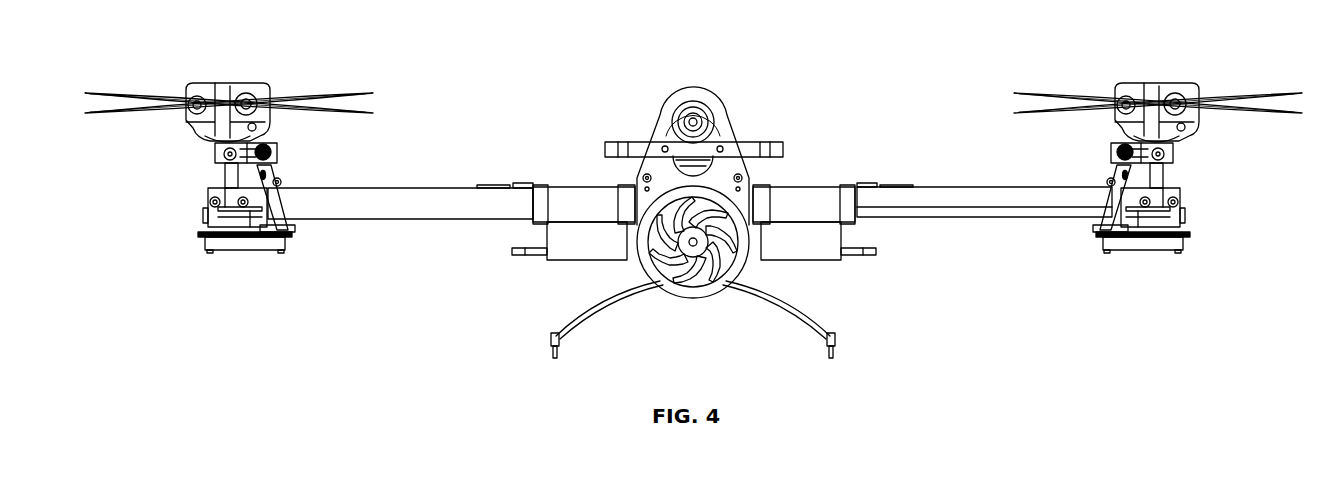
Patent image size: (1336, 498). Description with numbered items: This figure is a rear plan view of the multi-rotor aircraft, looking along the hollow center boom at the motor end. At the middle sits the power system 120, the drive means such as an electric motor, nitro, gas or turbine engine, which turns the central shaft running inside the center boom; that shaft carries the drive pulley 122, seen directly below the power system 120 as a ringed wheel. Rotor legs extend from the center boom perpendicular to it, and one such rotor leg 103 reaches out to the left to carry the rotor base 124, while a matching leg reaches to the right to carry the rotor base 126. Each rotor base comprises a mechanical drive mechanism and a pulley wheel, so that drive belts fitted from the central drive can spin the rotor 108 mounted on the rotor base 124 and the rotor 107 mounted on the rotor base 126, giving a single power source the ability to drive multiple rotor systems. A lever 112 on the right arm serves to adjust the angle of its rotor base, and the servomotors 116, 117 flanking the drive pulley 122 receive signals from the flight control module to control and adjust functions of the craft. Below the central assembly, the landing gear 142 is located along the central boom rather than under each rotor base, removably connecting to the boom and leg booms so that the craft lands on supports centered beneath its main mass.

The rotor leg 103 is at (423, 220).
The rotor 107 is at (1240, 93).
The rotor 108 is at (160, 97).
The lever 112 is at (968, 187).
The servomotor 116 is at (587, 263).
The servomotor 117 is at (845, 237).
The power system 120 is at (720, 107).
The drive pulley 122 is at (703, 300).
The rotor base 124 is at (208, 193).
The rotor base 126 is at (1180, 193).
The landing gear 142 is at (797, 313).